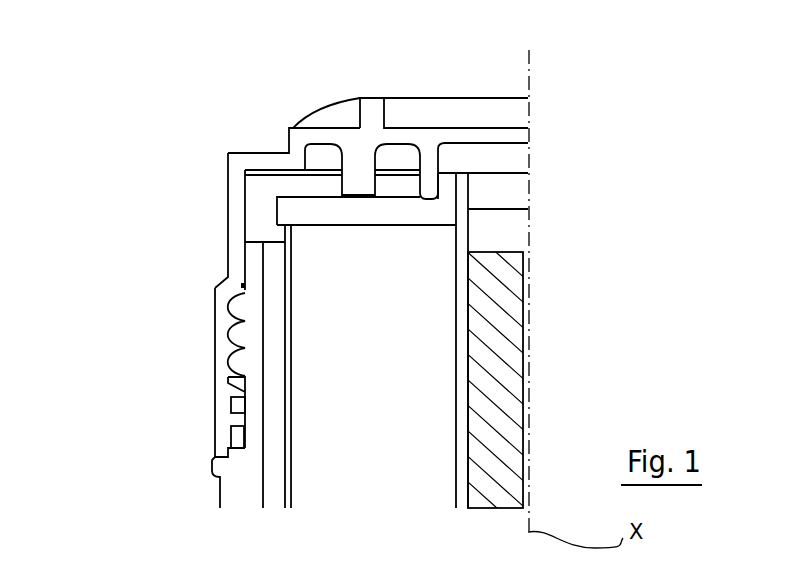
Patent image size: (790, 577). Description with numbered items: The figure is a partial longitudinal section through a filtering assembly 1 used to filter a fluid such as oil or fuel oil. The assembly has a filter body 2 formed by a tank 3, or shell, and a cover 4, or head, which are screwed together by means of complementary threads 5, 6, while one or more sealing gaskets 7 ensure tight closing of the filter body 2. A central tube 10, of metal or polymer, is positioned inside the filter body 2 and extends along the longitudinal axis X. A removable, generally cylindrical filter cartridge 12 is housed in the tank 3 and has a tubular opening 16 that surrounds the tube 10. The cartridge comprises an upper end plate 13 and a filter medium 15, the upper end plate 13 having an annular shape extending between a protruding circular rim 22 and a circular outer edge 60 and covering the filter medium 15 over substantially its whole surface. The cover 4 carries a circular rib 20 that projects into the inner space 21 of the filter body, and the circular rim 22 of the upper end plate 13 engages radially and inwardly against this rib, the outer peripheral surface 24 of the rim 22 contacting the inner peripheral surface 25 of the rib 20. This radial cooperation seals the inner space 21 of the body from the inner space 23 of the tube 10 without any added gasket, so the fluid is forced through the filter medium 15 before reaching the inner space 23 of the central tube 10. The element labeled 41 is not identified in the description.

The filtering assembly 1 is at (227, 84).
The filter body 2 is at (217, 243).
The tank 3 is at (232, 490).
The cover 4 is at (319, 137).
The thread 5 is at (234, 318).
The thread 6 is at (222, 368).
The sealing gasket 7 is at (236, 443).
The tube 10 is at (463, 358).
The filter cartridge 12 is at (306, 480).
The upper end plate 13 is at (391, 210).
The filter medium 15 is at (374, 477).
The tubular opening 16 is at (456, 441).
The circular rib 20 is at (430, 158).
The inner space 21 is at (266, 186).
The circular rim 22 is at (440, 191).
The inner space 23 is at (495, 233).
The outer peripheral surface 24 is at (456, 192).
The inner peripheral surface 25 is at (424, 185).
The flange 41 is at (450, 183).
The circular outer edge 60 is at (283, 213).